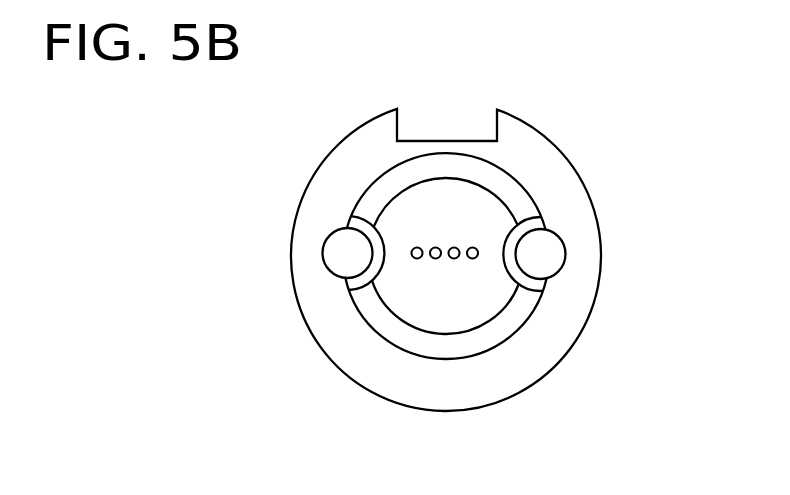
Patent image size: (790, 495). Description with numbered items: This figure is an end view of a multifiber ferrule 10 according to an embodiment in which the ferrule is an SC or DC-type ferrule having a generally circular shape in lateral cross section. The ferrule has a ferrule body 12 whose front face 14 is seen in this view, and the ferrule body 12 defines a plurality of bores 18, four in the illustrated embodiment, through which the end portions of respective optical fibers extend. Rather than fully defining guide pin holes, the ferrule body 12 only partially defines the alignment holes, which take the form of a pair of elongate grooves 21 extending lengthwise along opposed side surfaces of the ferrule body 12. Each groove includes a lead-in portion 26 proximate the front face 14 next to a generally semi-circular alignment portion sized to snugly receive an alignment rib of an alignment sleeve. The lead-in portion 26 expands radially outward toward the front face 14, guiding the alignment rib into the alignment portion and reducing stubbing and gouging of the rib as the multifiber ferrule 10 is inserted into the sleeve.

The multifiber ferrule 10 is at (557, 92).
The ferrule body 12 is at (568, 159).
The front face 14 is at (448, 305).
The bores 18 is at (416, 259).
The elongate grooves 21 is at (322, 251).
The lead-in portion 26 is at (352, 288).